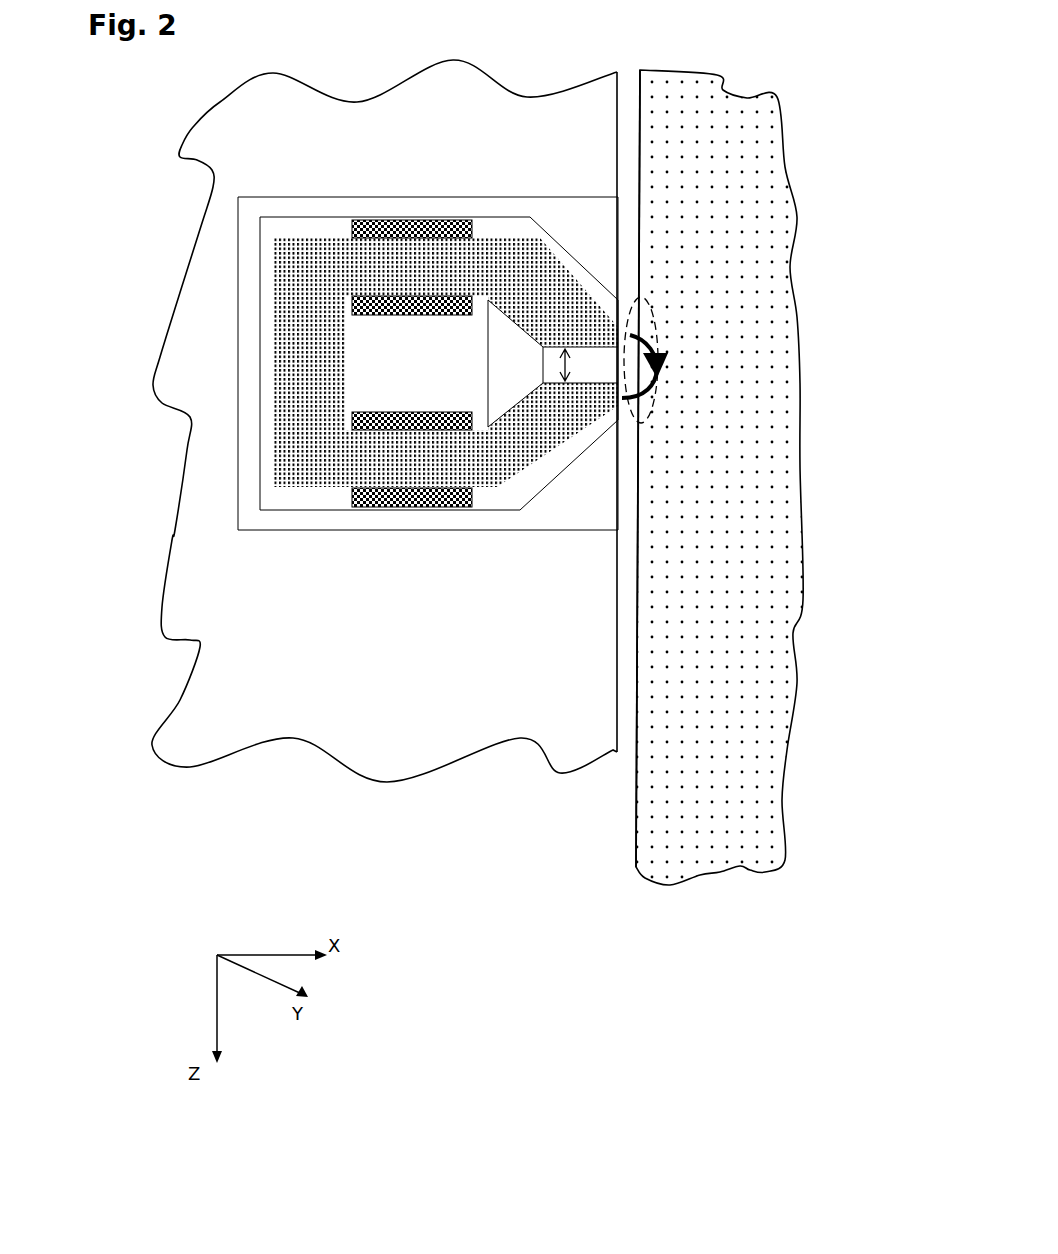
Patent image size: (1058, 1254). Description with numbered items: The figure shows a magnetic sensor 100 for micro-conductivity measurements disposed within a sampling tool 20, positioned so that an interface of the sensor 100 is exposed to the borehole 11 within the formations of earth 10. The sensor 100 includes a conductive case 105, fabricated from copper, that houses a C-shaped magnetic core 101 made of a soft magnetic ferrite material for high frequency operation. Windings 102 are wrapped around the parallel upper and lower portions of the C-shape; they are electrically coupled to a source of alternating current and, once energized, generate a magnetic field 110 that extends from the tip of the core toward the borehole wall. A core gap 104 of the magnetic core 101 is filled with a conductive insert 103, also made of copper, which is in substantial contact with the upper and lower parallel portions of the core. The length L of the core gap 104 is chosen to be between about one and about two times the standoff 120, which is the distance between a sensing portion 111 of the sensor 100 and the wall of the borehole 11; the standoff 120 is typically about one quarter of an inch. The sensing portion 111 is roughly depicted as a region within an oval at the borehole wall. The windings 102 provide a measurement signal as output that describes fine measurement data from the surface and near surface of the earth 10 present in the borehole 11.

The earth 10 is at (728, 615).
The borehole 11 is at (588, 845).
The sampling tool 20 is at (223, 738).
The magnetic sensor 100 is at (247, 410).
The magnetic core 101 is at (349, 253).
The windings 102 is at (452, 296).
The conductive insert 103 is at (507, 368).
The core gap 104 is at (555, 365).
The conductive case 105 is at (287, 210).
The magnetic field 110 is at (657, 380).
The sensing portion 111 is at (637, 317).
The standoff 120 is at (623, 677).